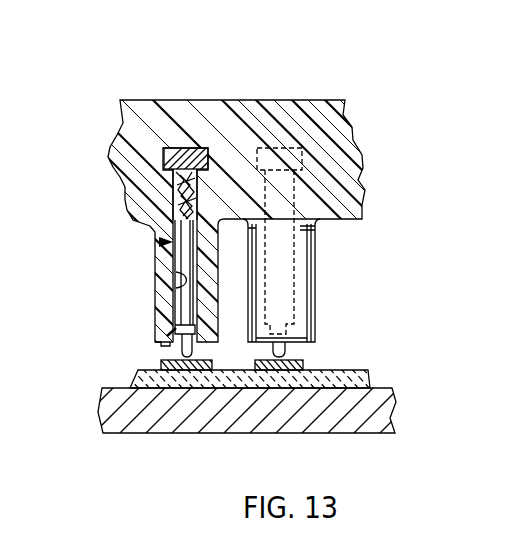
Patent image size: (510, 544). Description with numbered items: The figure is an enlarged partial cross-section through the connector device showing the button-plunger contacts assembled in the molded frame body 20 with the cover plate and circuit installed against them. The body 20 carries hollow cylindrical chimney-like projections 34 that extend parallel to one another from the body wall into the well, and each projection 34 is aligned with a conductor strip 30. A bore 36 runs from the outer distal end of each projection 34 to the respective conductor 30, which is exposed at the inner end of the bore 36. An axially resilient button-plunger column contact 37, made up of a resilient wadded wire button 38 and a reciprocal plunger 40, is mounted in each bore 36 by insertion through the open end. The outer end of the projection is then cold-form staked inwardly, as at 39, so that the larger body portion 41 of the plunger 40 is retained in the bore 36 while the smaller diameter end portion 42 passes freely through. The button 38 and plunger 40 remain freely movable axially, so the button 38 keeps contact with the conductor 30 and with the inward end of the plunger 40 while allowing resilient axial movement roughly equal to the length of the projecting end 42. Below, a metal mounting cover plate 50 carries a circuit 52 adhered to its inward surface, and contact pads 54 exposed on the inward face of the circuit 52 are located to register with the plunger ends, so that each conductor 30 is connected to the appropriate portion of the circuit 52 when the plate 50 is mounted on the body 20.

The molded frame body 20 is at (159, 100).
The conductor strip 30 is at (214, 200).
The button-plunger column contact 37 is at (217, 206).
The wadded wire button 38 is at (118, 178).
The plunger 40 is at (160, 242).
The chimney-like projection 34 is at (158, 270).
The bore 36 is at (174, 297).
The larger body portion 41 is at (173, 324).
The staked end 39 is at (180, 346).
The smaller diameter end portion 42 is at (194, 350).
The contact pad 54 is at (172, 370).
The circuit 52 is at (138, 373).
The metal mounting cover plate 50 is at (106, 410).